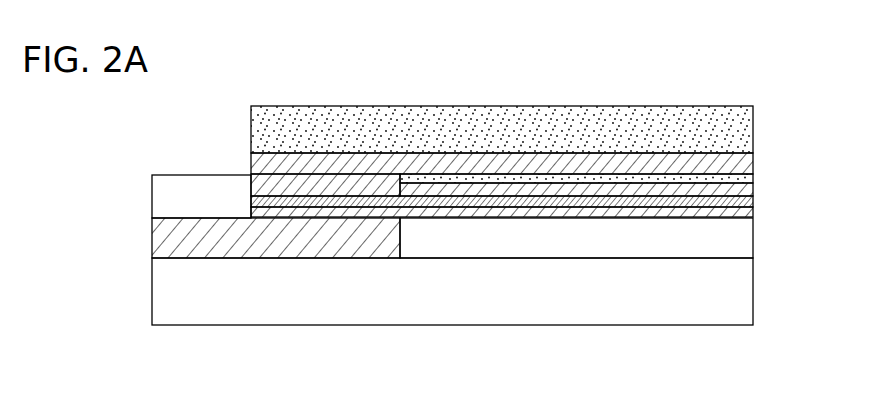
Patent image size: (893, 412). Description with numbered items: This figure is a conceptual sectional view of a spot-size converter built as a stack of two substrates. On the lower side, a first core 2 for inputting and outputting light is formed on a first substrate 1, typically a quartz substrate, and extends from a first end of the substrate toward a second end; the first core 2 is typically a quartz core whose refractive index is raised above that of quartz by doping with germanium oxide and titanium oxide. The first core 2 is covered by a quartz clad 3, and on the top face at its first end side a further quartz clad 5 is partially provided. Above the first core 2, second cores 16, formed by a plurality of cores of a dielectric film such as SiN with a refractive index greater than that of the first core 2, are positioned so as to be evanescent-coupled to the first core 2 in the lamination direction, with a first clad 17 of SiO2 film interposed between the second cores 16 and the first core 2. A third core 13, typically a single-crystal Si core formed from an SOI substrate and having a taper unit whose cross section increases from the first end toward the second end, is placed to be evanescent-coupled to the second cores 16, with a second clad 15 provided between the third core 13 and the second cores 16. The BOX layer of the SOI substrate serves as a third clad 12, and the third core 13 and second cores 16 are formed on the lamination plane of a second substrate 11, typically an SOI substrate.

The first substrate 1 is at (160, 288).
The first core 2 is at (154, 242).
The quartz clad 3 is at (606, 237).
The quartz clad 5 is at (160, 200).
The second substrate 11 is at (753, 126).
The third clad 12 is at (753, 164).
The third core 13 is at (753, 178).
The second clad 15 is at (753, 190).
The second cores 16 is at (448, 207).
The first clad 17 is at (753, 208).